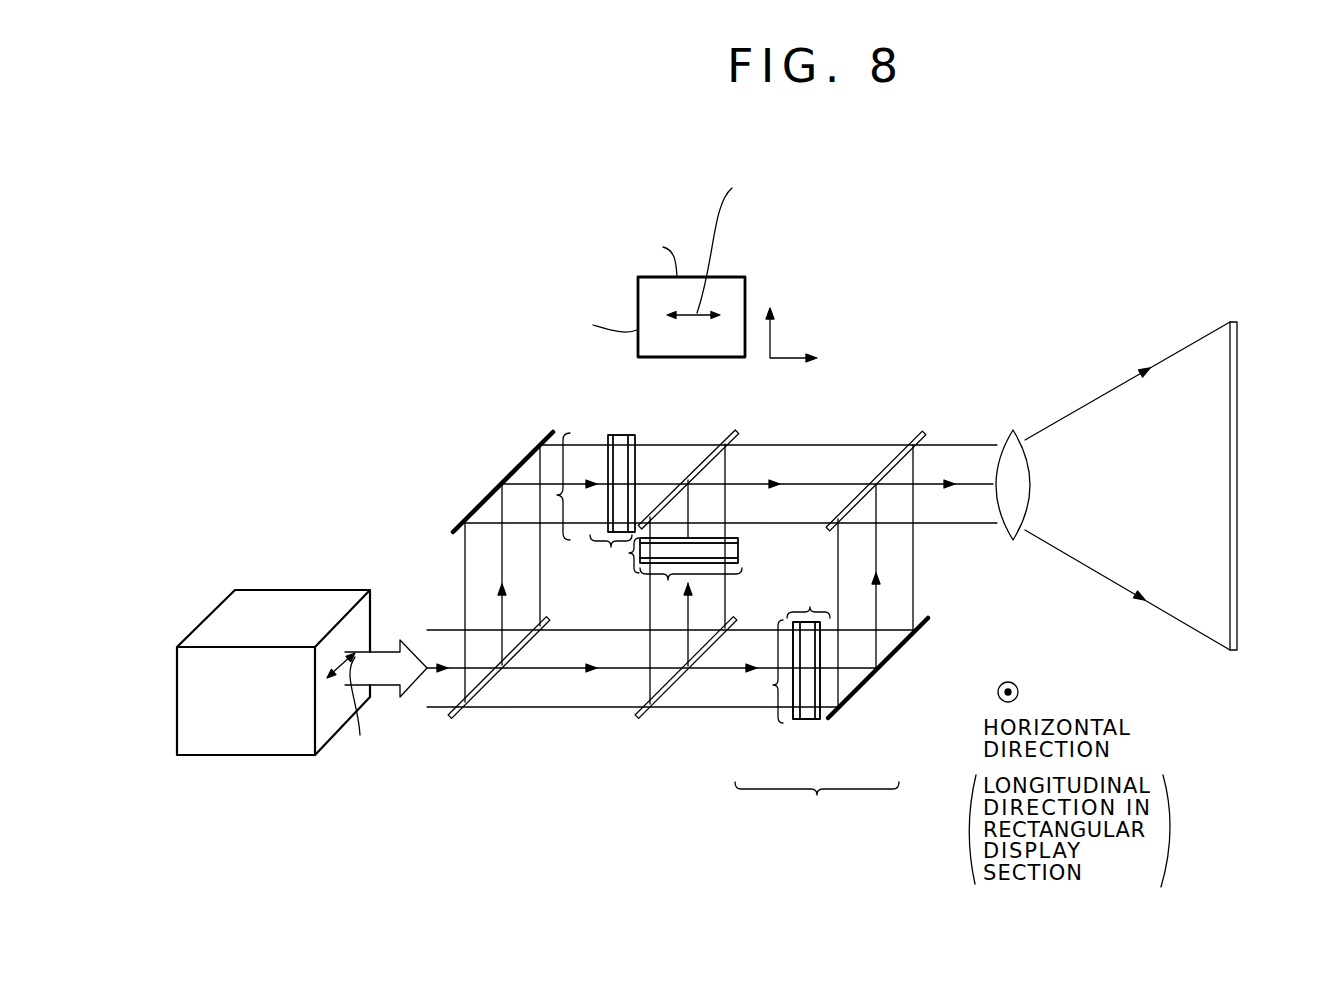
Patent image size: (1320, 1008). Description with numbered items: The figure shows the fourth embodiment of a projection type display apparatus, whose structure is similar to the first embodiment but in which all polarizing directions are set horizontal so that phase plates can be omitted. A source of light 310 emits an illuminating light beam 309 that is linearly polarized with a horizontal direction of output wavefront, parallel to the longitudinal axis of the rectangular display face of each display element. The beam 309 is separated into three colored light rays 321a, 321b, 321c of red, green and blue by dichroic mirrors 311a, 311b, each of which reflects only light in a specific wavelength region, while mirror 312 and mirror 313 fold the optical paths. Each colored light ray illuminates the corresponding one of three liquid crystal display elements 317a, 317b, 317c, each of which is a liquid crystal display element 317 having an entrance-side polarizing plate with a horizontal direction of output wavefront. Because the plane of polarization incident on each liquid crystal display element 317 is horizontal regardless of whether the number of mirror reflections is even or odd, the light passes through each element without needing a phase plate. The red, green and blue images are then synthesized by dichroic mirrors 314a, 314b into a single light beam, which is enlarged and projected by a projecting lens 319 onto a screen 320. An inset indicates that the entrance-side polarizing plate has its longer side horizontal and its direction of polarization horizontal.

The illuminating light beam 309 is at (382, 650).
The source of light 310 is at (285, 757).
The dichroic mirror 311a is at (452, 718).
The dichroic mirror 311b is at (638, 718).
The mirror 312 is at (496, 489).
The mirror 313 is at (900, 647).
The dichroic mirror 314a is at (737, 432).
The dichroic mirror 314b is at (925, 432).
The liquid crystal display element 317 is at (835, 821).
The liquid crystal display element 317a is at (810, 608).
The liquid crystal display element 317b is at (629, 554).
The liquid crystal display element 317c is at (611, 548).
The projecting lens 319 is at (1013, 541).
The screen 320 is at (1230, 655).
The colored light ray 321a is at (773, 685).
The colored light ray 321b is at (668, 582).
The colored light ray 321c is at (557, 495).